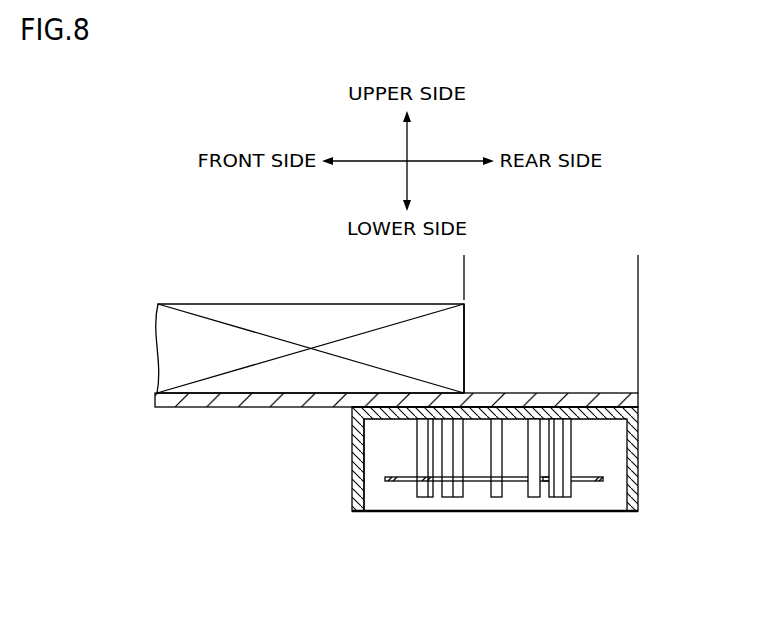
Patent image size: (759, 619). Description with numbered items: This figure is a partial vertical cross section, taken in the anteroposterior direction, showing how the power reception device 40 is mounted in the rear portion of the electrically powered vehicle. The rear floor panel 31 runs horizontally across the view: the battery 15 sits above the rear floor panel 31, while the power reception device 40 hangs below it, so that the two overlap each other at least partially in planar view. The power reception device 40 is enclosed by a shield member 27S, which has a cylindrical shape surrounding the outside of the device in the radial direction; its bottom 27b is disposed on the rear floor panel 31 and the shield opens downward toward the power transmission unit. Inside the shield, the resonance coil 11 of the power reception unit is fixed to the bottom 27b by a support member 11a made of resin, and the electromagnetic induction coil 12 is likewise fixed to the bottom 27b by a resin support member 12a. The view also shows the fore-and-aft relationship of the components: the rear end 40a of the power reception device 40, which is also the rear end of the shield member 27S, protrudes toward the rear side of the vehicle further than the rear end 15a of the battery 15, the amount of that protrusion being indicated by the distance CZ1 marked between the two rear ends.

The battery 15 is at (300, 320).
The rear end of battery 15a is at (466, 328).
The rear floor panel 31 is at (586, 405).
The bottom of shield member 27b is at (524, 405).
The power reception device 40 is at (446, 520).
The rear end of power reception device 40a is at (638, 472).
The shield member 27S is at (362, 491).
The resonance coil 11 is at (563, 481).
The support member 11a is at (540, 452).
The electromagnetic induction coil 12 is at (597, 481).
The support member 12a is at (567, 452).
The distance CZ1 is at (632, 263).